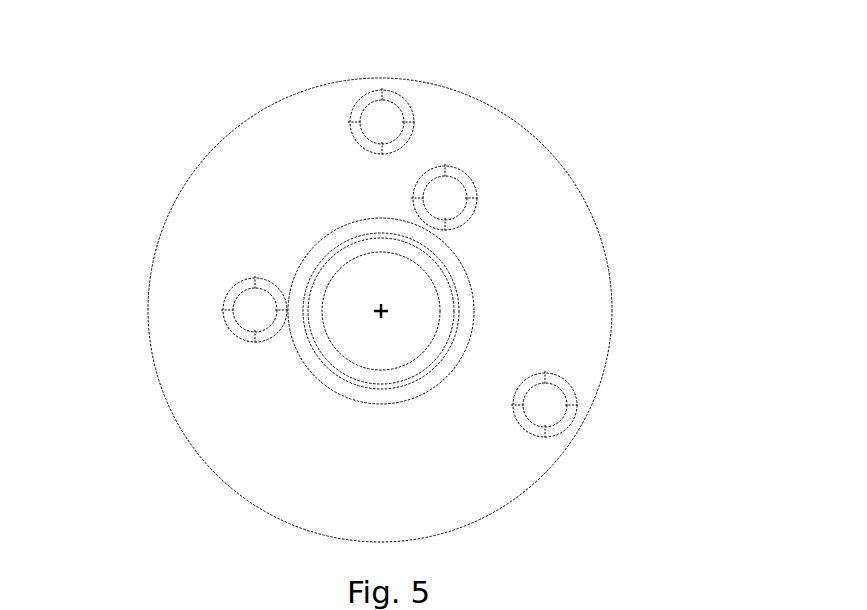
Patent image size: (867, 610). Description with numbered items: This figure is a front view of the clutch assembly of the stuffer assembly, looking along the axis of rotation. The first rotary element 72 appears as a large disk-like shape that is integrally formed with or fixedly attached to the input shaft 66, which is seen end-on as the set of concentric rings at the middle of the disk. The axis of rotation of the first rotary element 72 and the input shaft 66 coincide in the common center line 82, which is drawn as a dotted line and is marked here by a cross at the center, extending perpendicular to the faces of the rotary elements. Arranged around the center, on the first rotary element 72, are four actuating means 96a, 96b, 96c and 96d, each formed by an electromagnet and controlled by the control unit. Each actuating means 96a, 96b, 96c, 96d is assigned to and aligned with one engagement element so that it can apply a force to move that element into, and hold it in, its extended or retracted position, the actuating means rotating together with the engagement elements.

The first rotary element 72 is at (550, 205).
The input shaft 66 is at (450, 304).
The center line 82 is at (383, 311).
The actuating means 96a is at (408, 101).
The actuating means 96b is at (477, 187).
The actuating means 96c is at (570, 383).
The actuating means 96d is at (225, 300).